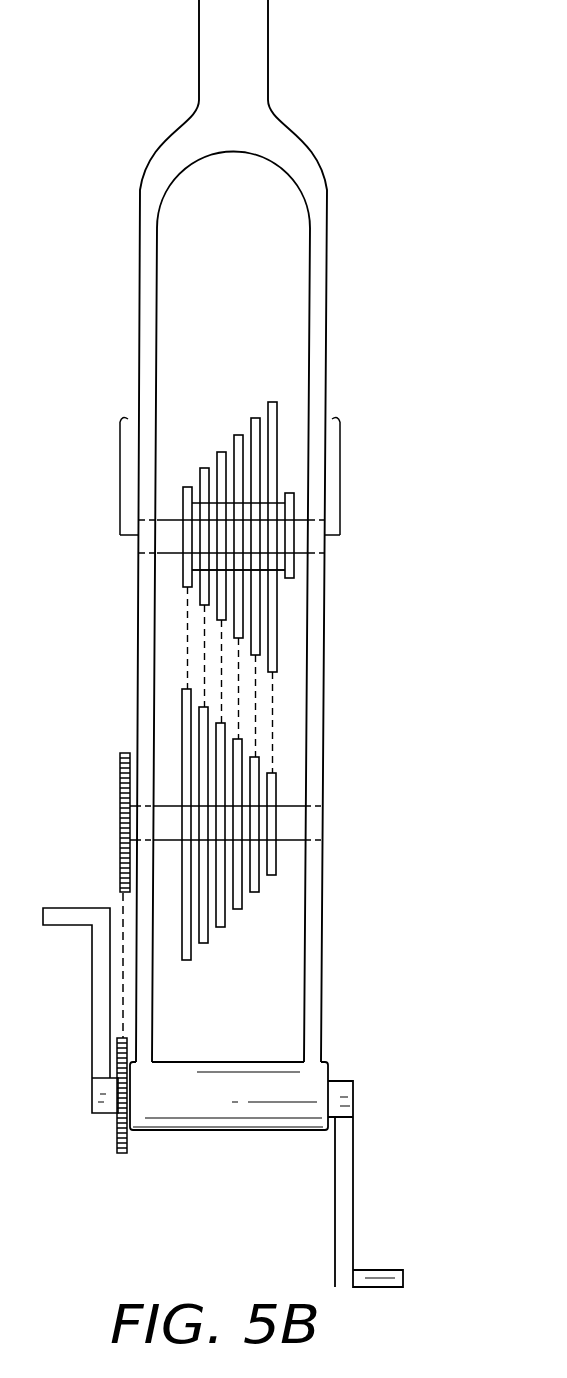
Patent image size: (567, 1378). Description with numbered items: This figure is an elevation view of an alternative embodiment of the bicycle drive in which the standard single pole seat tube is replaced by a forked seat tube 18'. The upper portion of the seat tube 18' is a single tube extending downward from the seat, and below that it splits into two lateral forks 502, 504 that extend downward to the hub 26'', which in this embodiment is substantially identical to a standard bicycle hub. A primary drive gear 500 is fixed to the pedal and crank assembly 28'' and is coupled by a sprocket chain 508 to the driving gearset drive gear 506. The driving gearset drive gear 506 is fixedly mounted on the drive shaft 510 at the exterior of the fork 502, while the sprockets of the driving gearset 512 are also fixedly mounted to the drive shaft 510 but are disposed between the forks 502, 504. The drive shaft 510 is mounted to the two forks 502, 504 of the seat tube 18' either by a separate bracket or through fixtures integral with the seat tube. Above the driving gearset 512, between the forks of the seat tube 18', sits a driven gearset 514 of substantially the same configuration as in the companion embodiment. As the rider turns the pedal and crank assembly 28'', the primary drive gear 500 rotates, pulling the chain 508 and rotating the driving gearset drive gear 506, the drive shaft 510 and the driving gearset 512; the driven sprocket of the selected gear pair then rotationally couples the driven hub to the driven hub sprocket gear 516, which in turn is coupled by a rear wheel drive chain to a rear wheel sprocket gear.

The forked seat tube 18' is at (308, 81).
The fork 502 is at (147, 330).
The fork 504 is at (317, 322).
The driven gearset 514 is at (292, 423).
The driven hub sprocket gear 516 is at (290, 565).
The driving gearset 512 is at (288, 774).
The drive shaft 510 is at (293, 823).
The driving gearset drive gear 506 is at (125, 753).
The sprocket chain 508 is at (123, 987).
The primary drive gear 500 is at (115, 1140).
The pedal and crank assembly 28'' is at (61, 1010).
The hub 26'' is at (266, 1174).